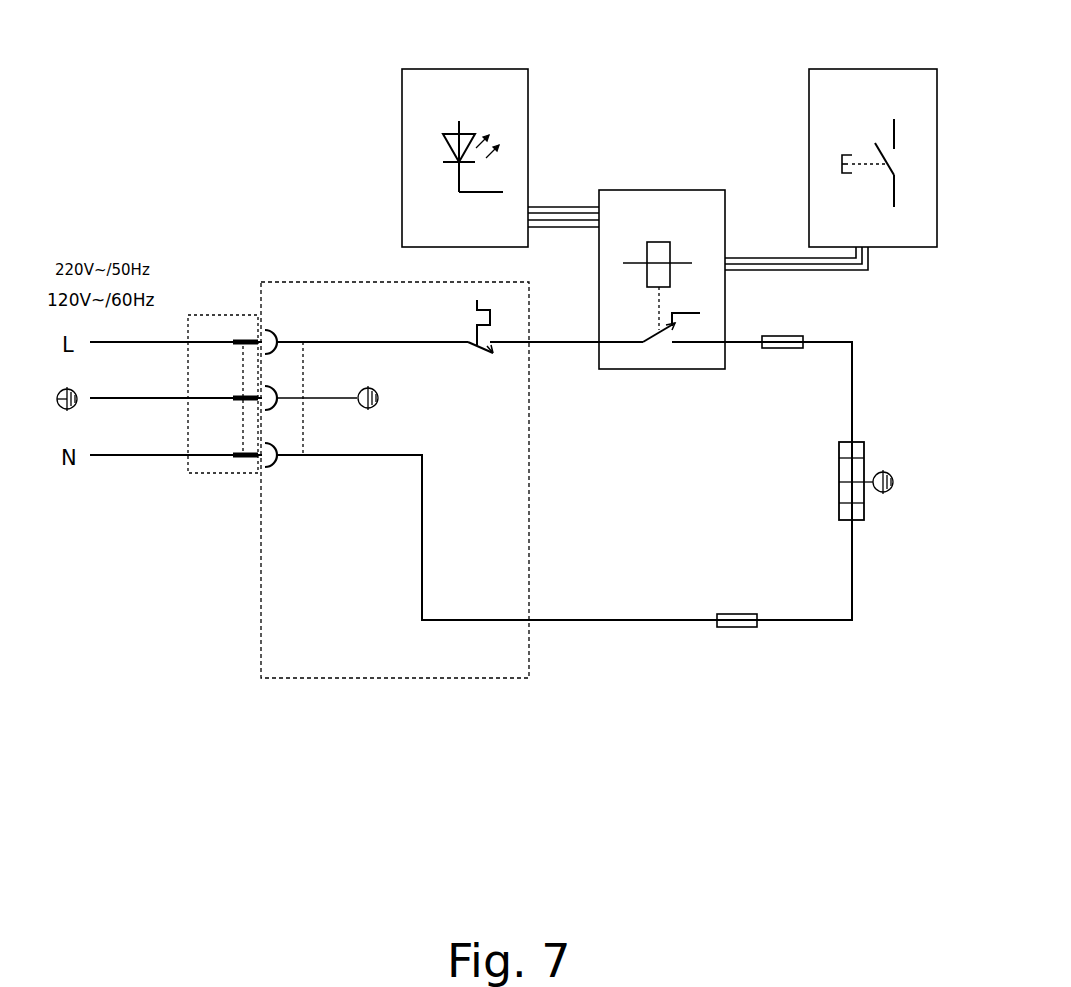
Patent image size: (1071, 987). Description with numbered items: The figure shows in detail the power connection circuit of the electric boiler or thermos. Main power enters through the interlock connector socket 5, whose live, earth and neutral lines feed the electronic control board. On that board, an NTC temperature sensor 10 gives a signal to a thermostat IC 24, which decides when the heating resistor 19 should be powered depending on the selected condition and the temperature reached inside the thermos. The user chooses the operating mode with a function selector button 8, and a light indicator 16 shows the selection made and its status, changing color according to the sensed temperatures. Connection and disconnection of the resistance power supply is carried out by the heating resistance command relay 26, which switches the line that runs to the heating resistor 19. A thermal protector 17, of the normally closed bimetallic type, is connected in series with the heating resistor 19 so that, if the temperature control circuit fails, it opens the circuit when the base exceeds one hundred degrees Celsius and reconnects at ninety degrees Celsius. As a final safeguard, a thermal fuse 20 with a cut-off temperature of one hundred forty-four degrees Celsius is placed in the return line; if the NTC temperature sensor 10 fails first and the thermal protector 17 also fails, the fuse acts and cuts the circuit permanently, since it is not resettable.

The interlock connector socket 5 is at (228, 475).
The thermostat IC 24 is at (505, 497).
The NTC temperature sensor 10 is at (470, 318).
The light indicator 16 is at (427, 120).
The heating resistance command relay 26 is at (652, 207).
The function selector button 8 is at (858, 103).
The thermal protector 17 is at (803, 340).
The heating resistor 19 is at (858, 466).
The thermal fuse 20 is at (757, 627).